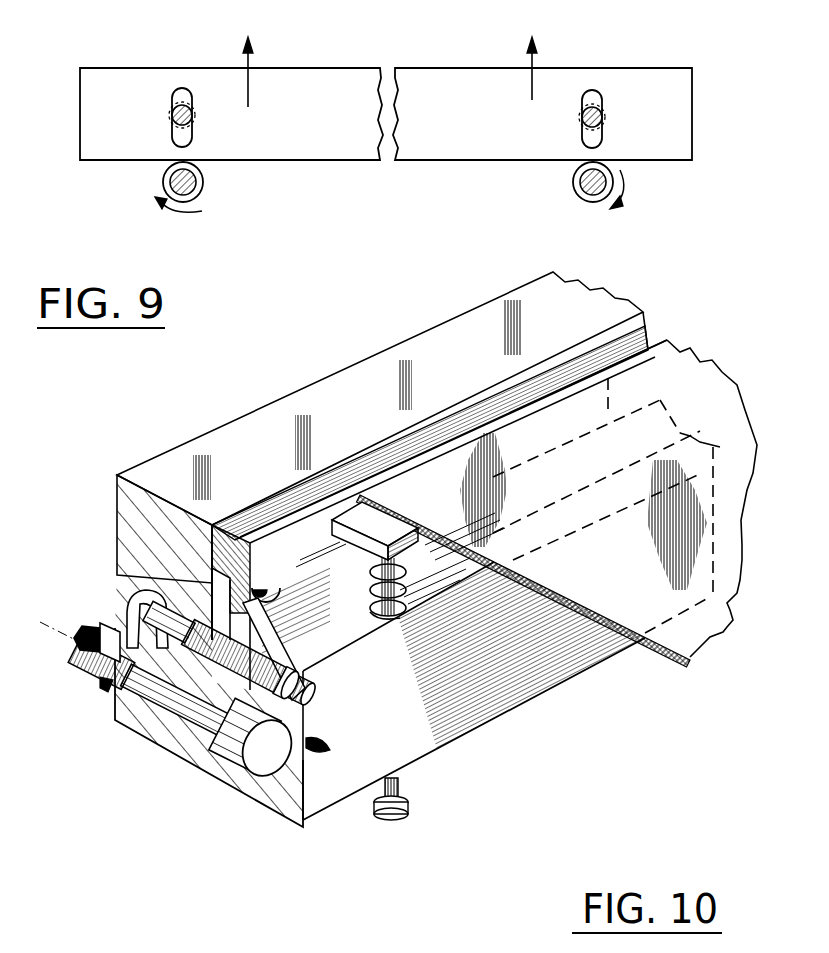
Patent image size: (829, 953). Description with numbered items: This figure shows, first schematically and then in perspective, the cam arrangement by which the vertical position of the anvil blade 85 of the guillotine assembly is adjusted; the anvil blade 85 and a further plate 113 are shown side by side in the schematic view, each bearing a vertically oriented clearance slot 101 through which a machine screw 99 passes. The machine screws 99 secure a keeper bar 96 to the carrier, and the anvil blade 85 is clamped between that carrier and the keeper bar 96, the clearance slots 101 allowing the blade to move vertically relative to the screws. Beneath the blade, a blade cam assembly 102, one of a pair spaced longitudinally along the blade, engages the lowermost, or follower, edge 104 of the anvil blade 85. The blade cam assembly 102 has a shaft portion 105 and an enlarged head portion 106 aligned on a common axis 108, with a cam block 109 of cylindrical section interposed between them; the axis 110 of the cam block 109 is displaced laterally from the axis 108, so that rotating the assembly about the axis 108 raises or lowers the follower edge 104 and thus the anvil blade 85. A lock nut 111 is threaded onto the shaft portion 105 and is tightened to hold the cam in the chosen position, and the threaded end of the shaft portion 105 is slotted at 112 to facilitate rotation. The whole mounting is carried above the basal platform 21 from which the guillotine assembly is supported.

In FIG. 10, the basal platform 21 is at (420, 747).
In FIG. 9, the anvil blade 85 is at (322, 83).
In FIG. 10, the anvil blade 85 is at (210, 552).
In FIG. 10, the keeper bar 96 is at (298, 403).
In FIG. 9, the machine screws 99 is at (192, 121).
In FIG. 10, the machine screws 99 is at (174, 628).
In FIG. 9, the clearance slots 101 is at (172, 99).
In FIG. 10, the clearance slots 101 is at (262, 583).
In FIG. 9, the blade cam assembly 102 is at (158, 173).
In FIG. 10, the blade cam assembly 102 is at (203, 762).
In FIG. 9, the follower edge 104 is at (306, 162).
In FIG. 10, the follower edge 104 is at (203, 710).
In FIG. 10, the shaft portion 105 is at (160, 696).
In FIG. 10, the enlarged head portion 106 is at (236, 760).
In FIG. 9, the axis 108 is at (205, 186).
In FIG. 10, the axis 108 is at (50, 626).
In FIG. 10, the cam block 109 is at (210, 732).
In FIG. 9, the axis of cam block 110 is at (183, 196).
In FIG. 10, the lock nut 111 is at (110, 690).
In FIG. 10, the slot 112 is at (80, 633).
In FIG. 9, the second slide plate 113 is at (440, 67).
In FIG. 10, the second slide plate 113 is at (352, 490).